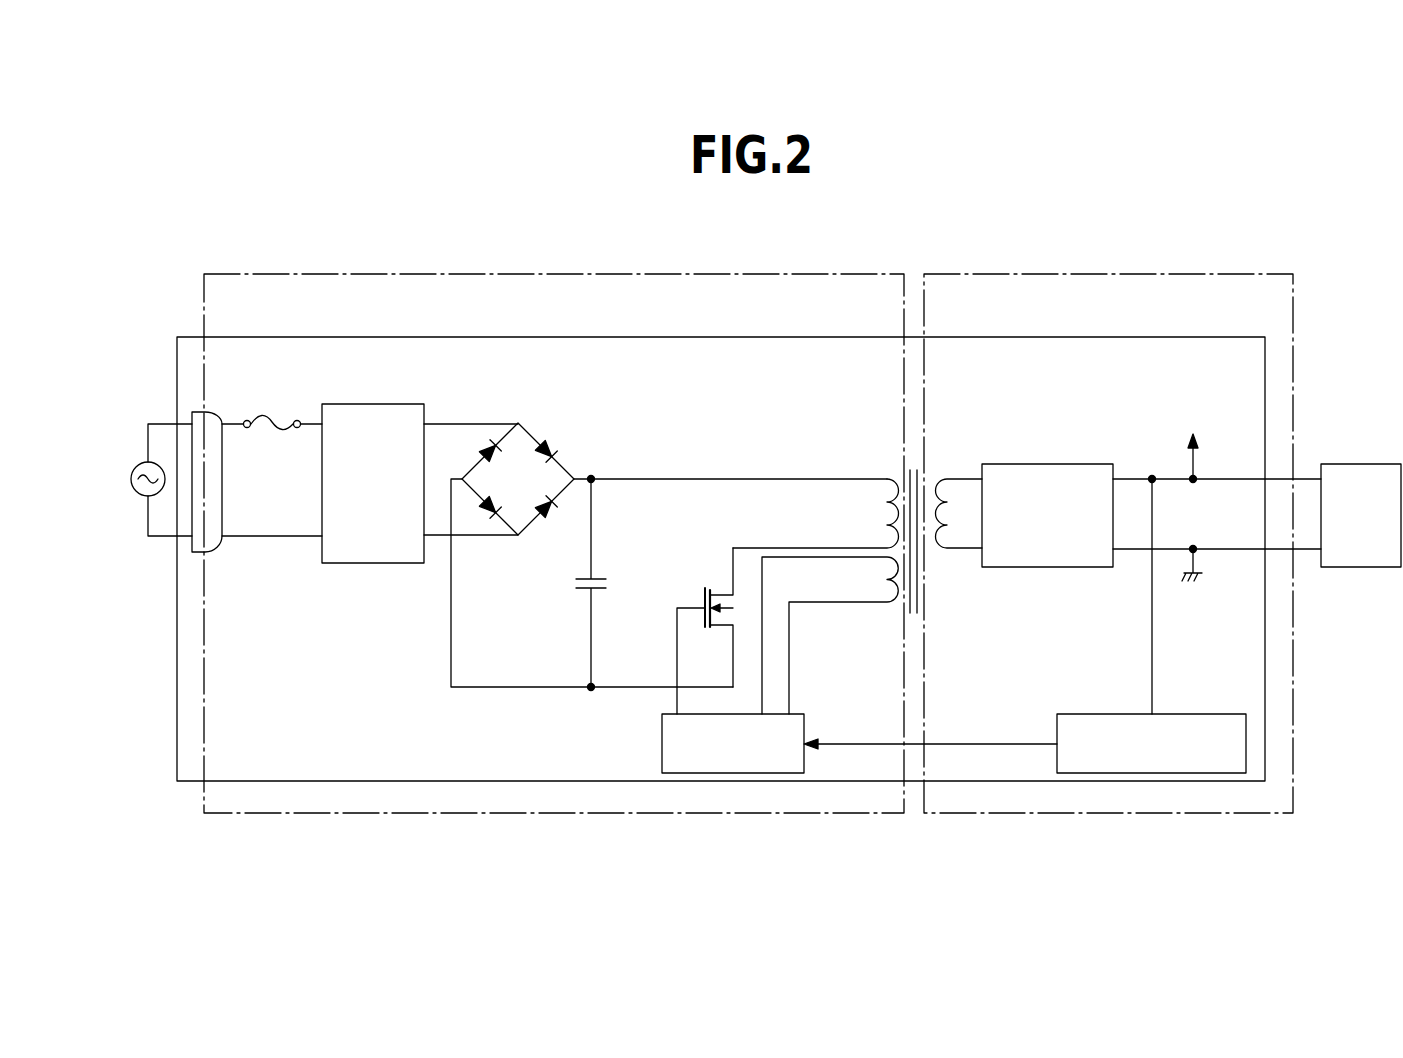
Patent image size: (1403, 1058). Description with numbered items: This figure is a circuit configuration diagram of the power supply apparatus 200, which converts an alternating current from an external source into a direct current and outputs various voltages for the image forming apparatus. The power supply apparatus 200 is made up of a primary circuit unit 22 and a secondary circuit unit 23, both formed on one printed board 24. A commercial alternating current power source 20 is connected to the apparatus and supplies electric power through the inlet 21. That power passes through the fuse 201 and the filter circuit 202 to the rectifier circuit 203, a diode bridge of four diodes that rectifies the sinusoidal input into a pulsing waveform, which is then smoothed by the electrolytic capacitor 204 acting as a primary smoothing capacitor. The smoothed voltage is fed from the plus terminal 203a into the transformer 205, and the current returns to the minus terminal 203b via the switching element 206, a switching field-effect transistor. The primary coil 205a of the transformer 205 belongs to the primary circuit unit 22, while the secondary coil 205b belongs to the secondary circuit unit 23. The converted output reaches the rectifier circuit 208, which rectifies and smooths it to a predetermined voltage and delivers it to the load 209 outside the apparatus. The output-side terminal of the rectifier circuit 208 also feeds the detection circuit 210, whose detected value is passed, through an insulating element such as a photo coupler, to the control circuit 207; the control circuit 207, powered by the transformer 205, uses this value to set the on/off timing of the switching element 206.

The commercial alternating current power source 20 is at (138, 468).
The inlet 21 is at (208, 553).
The circuit unit (primary circuit unit) 22 is at (797, 274).
The circuit unit (secondary circuit unit) 23 is at (1165, 274).
The printed board 24 is at (285, 337).
The power supply apparatus 200 is at (1269, 238).
The fuse 201 is at (280, 418).
The filter circuit 202 is at (383, 404).
The rectifier circuit (primary rectifier circuit) 203 is at (530, 432).
The plus terminal 203a is at (591, 472).
The minus terminal 203b is at (464, 482).
The electrolytic capacitor 204 is at (608, 585).
The transformer 205 is at (937, 464).
The primary coil 205a is at (890, 478).
The secondary coil 205b is at (950, 552).
The switching element (switching field-effect transistor) 206 is at (703, 588).
The control circuit 207 is at (662, 745).
The rectifier circuit (secondary rectifier circuit) 208 is at (1042, 464).
The load 209 is at (1363, 464).
The detection circuit 210 is at (1203, 714).